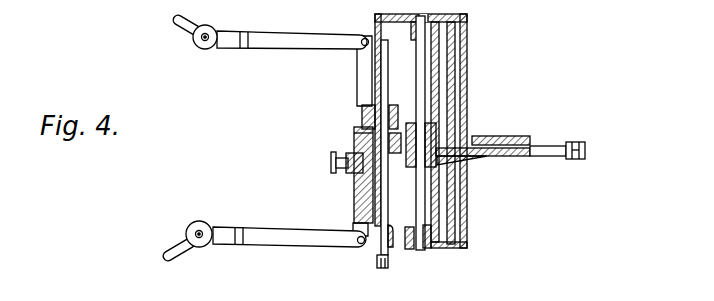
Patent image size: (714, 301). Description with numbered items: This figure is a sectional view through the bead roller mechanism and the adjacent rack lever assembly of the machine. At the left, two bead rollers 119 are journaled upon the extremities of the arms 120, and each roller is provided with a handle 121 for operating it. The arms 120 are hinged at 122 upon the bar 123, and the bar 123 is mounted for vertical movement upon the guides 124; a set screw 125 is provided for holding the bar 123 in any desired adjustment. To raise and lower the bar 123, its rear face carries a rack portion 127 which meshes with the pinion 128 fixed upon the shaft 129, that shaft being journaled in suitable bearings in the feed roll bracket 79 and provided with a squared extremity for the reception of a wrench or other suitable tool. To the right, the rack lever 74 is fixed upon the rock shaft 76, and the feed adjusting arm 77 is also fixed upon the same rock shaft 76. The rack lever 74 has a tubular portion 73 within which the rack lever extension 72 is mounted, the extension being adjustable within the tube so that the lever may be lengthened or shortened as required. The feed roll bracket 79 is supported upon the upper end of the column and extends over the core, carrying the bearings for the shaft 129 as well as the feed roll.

The rack lever extension 72 is at (546, 158).
The tubular portion 73 is at (516, 136).
The rack lever 74 is at (470, 159).
The rock shaft 76 is at (424, 75).
The feed adjusting arm 77 is at (436, 130).
The feed roll bracket 79 is at (455, 226).
The bead rollers 119 is at (206, 50).
The arms 120 is at (298, 46).
The handles 121 is at (166, 18).
The hinge 122 is at (357, 51).
The bar 123 is at (358, 116).
The guides 124 is at (378, 108).
The set screw 125 is at (334, 165).
The rack portion 127 is at (358, 138).
The pinion 128 is at (400, 153).
The shaft 129 is at (402, 244).